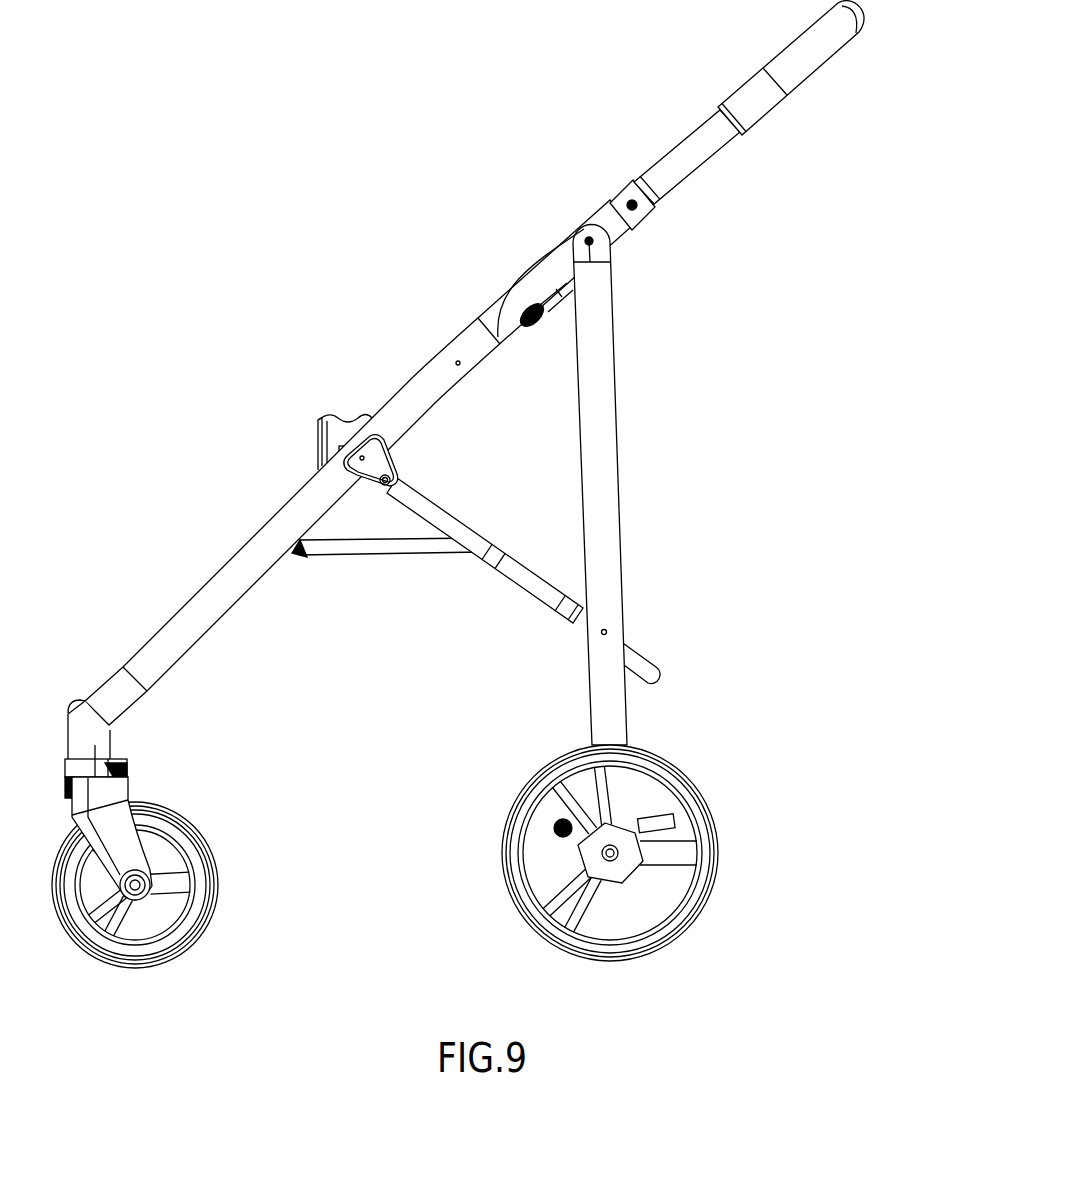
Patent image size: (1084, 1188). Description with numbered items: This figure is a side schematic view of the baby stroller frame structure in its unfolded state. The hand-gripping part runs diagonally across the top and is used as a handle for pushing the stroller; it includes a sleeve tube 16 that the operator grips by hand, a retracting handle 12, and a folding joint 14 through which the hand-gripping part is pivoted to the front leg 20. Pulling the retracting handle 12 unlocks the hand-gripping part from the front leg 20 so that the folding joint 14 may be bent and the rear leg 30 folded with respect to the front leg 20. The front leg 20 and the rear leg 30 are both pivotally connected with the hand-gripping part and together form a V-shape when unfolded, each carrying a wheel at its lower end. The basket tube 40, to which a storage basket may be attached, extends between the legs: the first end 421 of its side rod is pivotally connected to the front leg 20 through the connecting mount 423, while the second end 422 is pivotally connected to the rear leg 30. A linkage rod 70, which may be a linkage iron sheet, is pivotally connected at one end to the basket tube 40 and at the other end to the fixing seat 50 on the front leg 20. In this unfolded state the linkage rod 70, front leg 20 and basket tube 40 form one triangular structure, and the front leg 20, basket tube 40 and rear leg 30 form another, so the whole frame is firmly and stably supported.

The retracting handle 12 is at (642, 219).
The folding joint 14 is at (544, 275).
The sleeve tube 16 is at (813, 48).
The front leg 20 is at (203, 623).
The rear leg 30 is at (602, 583).
The basket tube 40 is at (525, 580).
The fixing seat 50 is at (343, 402).
The linkage rod 70 is at (370, 548).
The first end 421 is at (412, 495).
The second end 422 is at (668, 676).
The connecting mount 423 is at (378, 468).